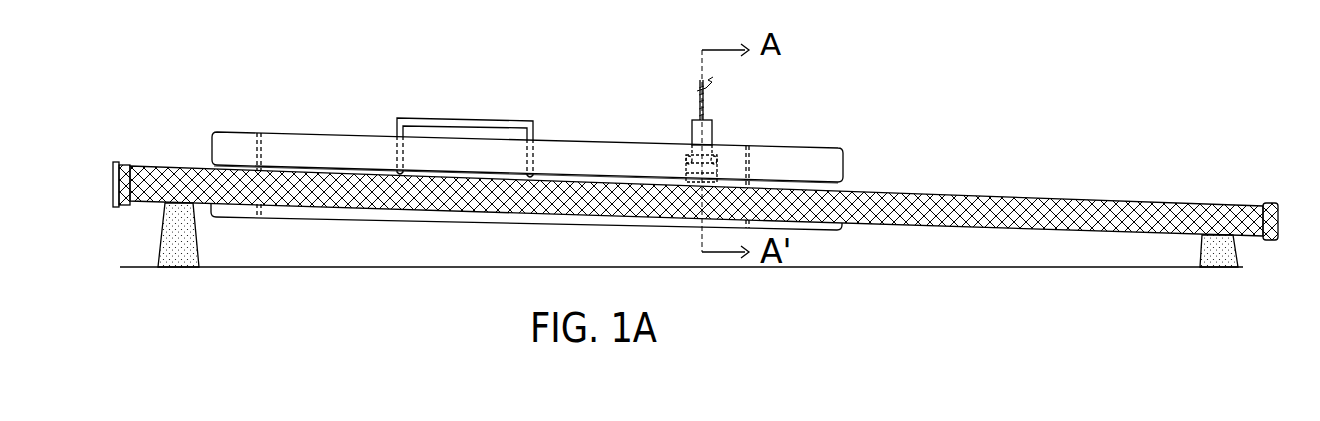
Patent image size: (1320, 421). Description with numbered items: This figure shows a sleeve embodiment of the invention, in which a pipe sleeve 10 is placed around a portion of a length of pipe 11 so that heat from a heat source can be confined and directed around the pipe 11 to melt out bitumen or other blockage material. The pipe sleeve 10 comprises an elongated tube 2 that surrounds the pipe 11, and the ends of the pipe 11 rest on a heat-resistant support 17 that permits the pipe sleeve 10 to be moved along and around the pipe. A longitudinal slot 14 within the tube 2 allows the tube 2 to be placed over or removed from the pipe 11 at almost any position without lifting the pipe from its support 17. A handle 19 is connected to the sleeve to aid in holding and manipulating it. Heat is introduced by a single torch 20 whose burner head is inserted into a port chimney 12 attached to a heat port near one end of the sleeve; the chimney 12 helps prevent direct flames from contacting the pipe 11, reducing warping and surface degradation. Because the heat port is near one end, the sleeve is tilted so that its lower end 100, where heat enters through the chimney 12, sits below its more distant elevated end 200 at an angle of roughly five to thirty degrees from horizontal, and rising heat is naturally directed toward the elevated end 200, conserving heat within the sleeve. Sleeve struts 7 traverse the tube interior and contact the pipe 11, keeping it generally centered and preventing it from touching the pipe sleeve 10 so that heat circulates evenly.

The elevated end 200 is at (223, 115).
The lower end 100 is at (832, 125).
The pipe sleeve 10 is at (465, 73).
The pipe 11 is at (903, 202).
The support 17 is at (197, 247).
The elongated tube 2 is at (582, 138).
The longitudinal slot 14 is at (217, 167).
The sleeve strut 7 is at (259, 170).
The handle 19 is at (448, 123).
The torch 20 is at (690, 125).
The port chimney 12 is at (685, 168).